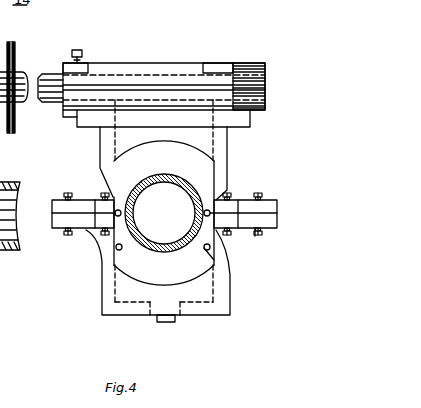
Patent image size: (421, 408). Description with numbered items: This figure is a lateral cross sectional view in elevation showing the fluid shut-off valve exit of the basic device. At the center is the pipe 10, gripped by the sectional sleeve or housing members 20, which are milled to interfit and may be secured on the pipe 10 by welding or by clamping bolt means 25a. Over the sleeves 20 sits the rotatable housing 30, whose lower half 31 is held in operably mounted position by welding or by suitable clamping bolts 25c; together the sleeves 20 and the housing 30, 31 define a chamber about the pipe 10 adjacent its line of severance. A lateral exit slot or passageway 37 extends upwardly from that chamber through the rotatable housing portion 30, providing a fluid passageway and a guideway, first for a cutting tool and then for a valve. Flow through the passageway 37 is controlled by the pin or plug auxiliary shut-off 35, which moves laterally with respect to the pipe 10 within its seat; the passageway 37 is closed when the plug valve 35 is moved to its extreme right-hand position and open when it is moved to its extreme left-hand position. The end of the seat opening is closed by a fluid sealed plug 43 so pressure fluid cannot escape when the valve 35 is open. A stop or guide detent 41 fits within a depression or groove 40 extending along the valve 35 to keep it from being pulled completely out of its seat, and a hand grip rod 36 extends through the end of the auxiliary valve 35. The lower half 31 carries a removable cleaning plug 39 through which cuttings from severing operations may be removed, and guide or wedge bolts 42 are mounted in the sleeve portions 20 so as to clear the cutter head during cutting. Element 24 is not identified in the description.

The pipe 10 is at (186, 172).
The sectional sleeve or housing member 20 is at (214, 166).
The cylinder member 24 is at (0, 273).
The clamping bolt means 25a is at (236, 196).
The clamping bolts 25c is at (258, 236).
The rotatable housing 30 is at (228, 136).
The lower half of rotatable housing 31 is at (232, 289).
The pin or plug auxiliary shut-off 35 is at (60, 104).
The hand grip rod 36 is at (14, 56).
The lateral exit slot or passageway 37 is at (204, 66).
The removable cleaning plug 39 is at (176, 319).
The depression or groove 40 is at (61, 73).
The stop or guide detent 41 is at (79, 50).
The guide or wedge bolts 42 is at (210, 249).
The fluid sealed plug 43 is at (266, 86).